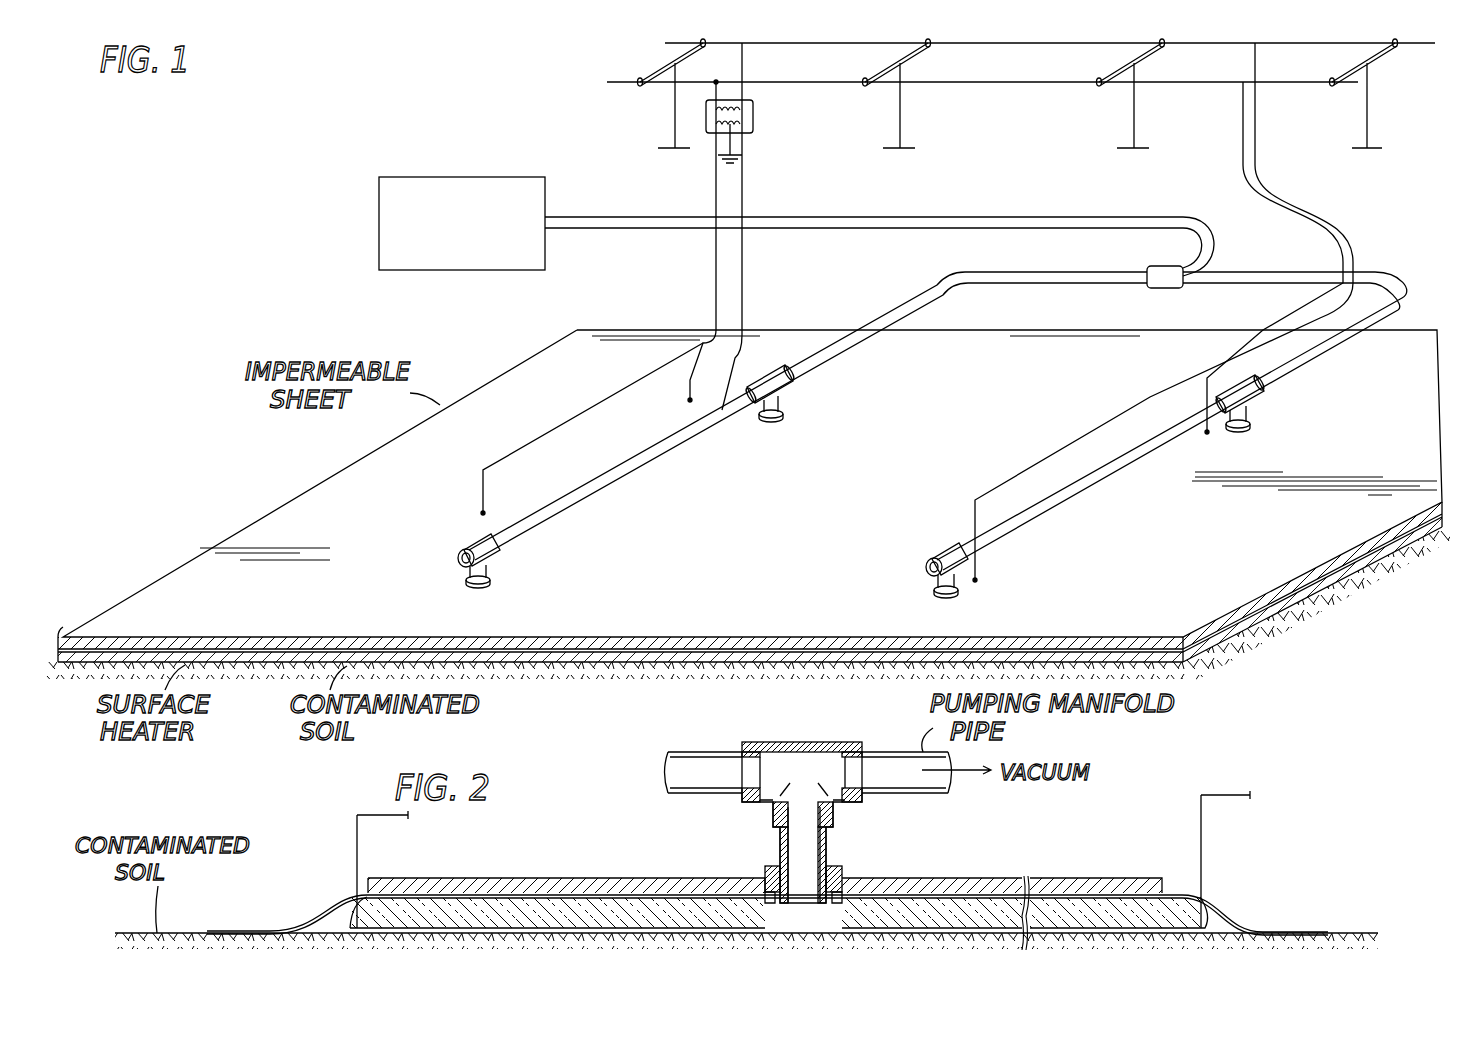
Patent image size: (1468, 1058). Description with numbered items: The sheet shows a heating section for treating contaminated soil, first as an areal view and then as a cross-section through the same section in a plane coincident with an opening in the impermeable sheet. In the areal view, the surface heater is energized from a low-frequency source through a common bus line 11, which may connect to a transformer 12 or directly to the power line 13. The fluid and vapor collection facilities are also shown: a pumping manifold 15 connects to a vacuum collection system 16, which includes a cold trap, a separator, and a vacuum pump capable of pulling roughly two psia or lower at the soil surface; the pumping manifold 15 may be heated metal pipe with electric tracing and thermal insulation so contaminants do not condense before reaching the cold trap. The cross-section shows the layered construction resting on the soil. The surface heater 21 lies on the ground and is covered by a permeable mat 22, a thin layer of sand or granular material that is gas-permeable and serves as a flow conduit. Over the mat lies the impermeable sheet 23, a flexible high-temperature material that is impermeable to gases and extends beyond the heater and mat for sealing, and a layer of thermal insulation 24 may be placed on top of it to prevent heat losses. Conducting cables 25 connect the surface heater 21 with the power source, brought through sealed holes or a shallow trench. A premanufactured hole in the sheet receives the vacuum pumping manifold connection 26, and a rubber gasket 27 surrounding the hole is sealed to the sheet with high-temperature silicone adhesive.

In FIG. 1, the common bus line 11 is at (1275, 195).
In FIG. 1, the transformer 12 is at (756, 122).
In FIG. 1, the power line 13 is at (968, 45).
In FIG. 1, the pumping manifold 15 is at (1246, 272).
In FIG. 1, the vacuum collection system 16 is at (379, 203).
In FIG. 2, the surface heater 21 is at (522, 928).
In FIG. 2, the permeable mat 22 is at (1157, 908).
In FIG. 2, the impermeable sheet 23 is at (1097, 893).
In FIG. 2, the layer of thermal insulation 24 is at (1058, 880).
In FIG. 2, the conducting cables 25 is at (357, 843).
In FIG. 2, the vacuum pumping manifold connection 26 is at (845, 866).
In FIG. 2, the rubber gasket 27 is at (848, 886).